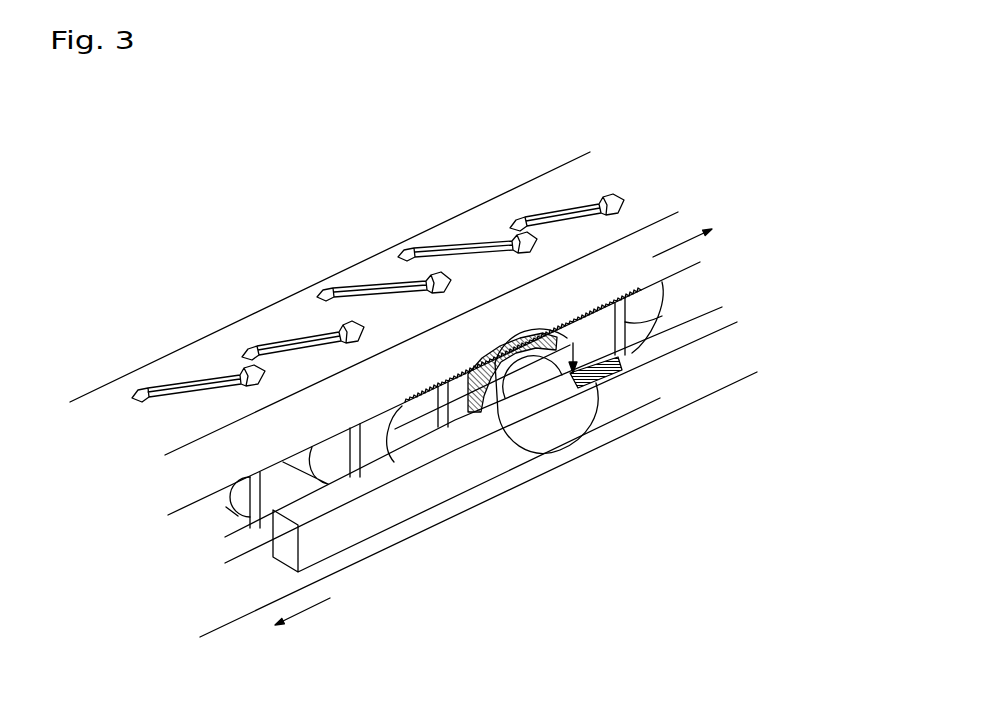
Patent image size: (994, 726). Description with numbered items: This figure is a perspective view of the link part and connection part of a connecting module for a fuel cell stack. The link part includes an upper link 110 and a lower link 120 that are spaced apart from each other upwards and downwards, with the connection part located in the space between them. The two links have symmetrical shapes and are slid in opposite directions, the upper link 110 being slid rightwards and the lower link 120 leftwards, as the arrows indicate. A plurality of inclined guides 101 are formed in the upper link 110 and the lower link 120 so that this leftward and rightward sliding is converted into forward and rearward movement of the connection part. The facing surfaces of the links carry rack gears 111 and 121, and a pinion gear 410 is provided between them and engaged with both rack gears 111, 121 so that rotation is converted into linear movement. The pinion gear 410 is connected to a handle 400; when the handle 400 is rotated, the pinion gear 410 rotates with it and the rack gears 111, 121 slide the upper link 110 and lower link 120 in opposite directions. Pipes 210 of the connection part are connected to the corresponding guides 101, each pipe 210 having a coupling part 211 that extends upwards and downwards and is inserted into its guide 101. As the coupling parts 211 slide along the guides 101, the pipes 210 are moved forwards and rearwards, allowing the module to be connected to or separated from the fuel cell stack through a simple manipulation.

The guide 101 is at (370, 293).
The upper link 110 is at (460, 233).
The rack gear 111 is at (630, 350).
The lower link 120 is at (708, 387).
The rack gear 121 is at (614, 376).
The pipe 210 is at (337, 462).
The coupling part 211 is at (357, 447).
The handle 400 is at (490, 463).
The pinion gear 410 is at (498, 407).